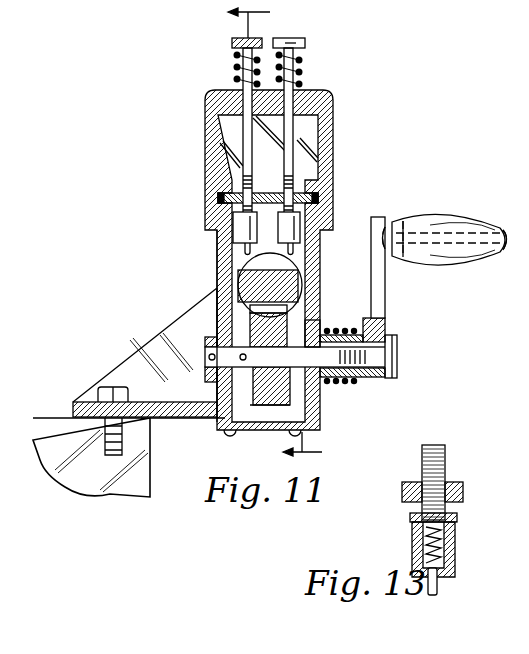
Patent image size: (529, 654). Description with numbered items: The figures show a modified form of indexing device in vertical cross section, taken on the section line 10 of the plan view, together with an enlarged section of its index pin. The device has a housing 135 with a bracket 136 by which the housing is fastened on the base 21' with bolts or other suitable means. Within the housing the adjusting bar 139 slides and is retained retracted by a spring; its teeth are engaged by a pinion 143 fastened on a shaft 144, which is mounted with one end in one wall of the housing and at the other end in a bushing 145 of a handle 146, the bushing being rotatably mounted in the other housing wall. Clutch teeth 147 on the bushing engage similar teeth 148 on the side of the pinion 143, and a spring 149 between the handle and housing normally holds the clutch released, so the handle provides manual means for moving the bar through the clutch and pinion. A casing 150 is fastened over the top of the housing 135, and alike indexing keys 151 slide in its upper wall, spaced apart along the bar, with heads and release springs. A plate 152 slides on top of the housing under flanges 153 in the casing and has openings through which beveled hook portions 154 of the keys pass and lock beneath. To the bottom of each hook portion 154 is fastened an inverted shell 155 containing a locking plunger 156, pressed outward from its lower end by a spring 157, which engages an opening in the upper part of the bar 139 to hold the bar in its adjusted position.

In FIG. 11, the section line 10— 10 is at (288, 235).
In FIG. 11, the casing 150 is at (333, 122).
In FIG. 11, the indexing keys 151 is at (333, 38).
In FIG. 11, the beveled hook portions 154 is at (243, 186).
In FIG. 13, the beveled hook portions 154 is at (445, 462).
In FIG. 11, the flanges 153 is at (300, 186).
In FIG. 11, the plate 152 is at (322, 200).
In FIG. 13, the plate 152 is at (463, 495).
In FIG. 11, the inverted shell 155 is at (236, 226).
In FIG. 13, the inverted shell 155 is at (412, 530).
In FIG. 11, the locking plunger 156 is at (245, 250).
In FIG. 13, the locking plunger 156 is at (428, 590).
In FIG. 13, the spring 157 is at (425, 549).
In FIG. 11, the housing 135 is at (220, 266).
In FIG. 11, the adjusting bar 139 is at (250, 290).
In FIG. 11, the pinion 143 is at (252, 326).
In FIG. 11, the shaft 144 is at (208, 357).
In FIG. 11, the bushing 145 is at (343, 385).
In FIG. 11, the handle 146 is at (385, 290).
In FIG. 11, the clutch teeth 147 is at (306, 342).
In FIG. 11, the teeth 148 is at (300, 433).
In FIG. 11, the spring 149 is at (355, 386).
In FIG. 11, the bracket 136 is at (140, 397).
In FIG. 11, the base 21' is at (123, 427).